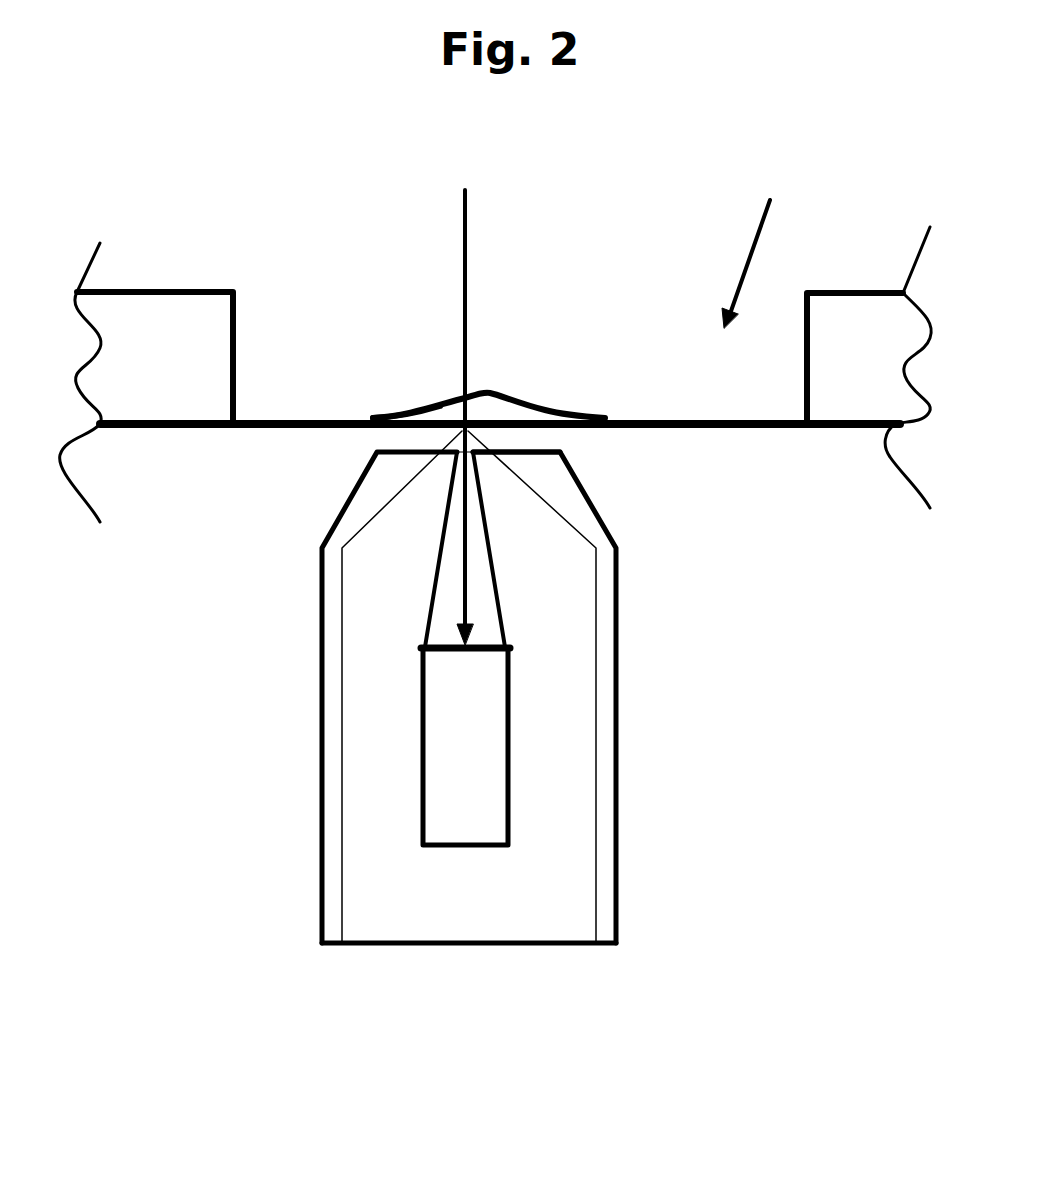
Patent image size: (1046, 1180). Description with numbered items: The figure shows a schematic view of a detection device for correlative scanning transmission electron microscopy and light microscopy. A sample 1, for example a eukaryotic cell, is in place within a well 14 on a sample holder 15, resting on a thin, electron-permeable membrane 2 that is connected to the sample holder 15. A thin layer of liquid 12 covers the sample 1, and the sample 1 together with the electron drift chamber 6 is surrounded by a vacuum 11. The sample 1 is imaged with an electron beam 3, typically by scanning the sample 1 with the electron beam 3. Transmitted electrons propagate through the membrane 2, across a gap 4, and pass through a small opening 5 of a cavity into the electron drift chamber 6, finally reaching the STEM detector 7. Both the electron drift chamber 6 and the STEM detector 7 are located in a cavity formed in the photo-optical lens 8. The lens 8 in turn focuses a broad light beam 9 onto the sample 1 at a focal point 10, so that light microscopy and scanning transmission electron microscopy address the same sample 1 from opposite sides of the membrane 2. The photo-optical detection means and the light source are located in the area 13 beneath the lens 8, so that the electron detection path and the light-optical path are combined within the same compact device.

The sample 1 is at (515, 407).
The membrane 2 is at (655, 418).
The electron beam 3 is at (483, 218).
The gap 4 is at (515, 443).
The small opening 5 is at (487, 457).
The electron drift chamber 6 is at (487, 566).
The STEM detector 7 is at (493, 705).
The photo-optical lens 8 is at (630, 716).
The light beam 9 is at (598, 760).
The focal point 10 is at (462, 428).
The vacuum 11 is at (188, 382).
The layer of liquid 12 is at (368, 413).
The area 13 is at (469, 975).
The well 14 is at (763, 242).
The sample holder 15 is at (787, 430).